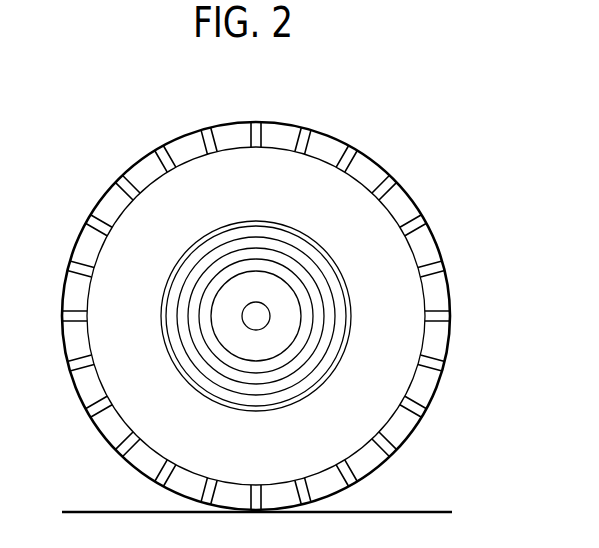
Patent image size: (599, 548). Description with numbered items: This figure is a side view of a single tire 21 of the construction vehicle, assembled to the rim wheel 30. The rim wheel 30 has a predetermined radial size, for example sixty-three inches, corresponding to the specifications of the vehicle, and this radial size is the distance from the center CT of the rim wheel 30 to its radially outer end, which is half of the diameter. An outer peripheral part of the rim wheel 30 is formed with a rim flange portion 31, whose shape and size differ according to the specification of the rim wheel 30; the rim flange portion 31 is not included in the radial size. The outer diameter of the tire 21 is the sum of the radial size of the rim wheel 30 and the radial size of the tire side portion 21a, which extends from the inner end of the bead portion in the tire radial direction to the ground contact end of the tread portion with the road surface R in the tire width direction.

The tire 21 is at (413, 197).
The tire side portion 21a is at (269, 178).
The rim wheel 30 is at (291, 316).
The rim flange portion 31 is at (332, 273).
The center CT is at (258, 314).
The road surface R is at (423, 511).